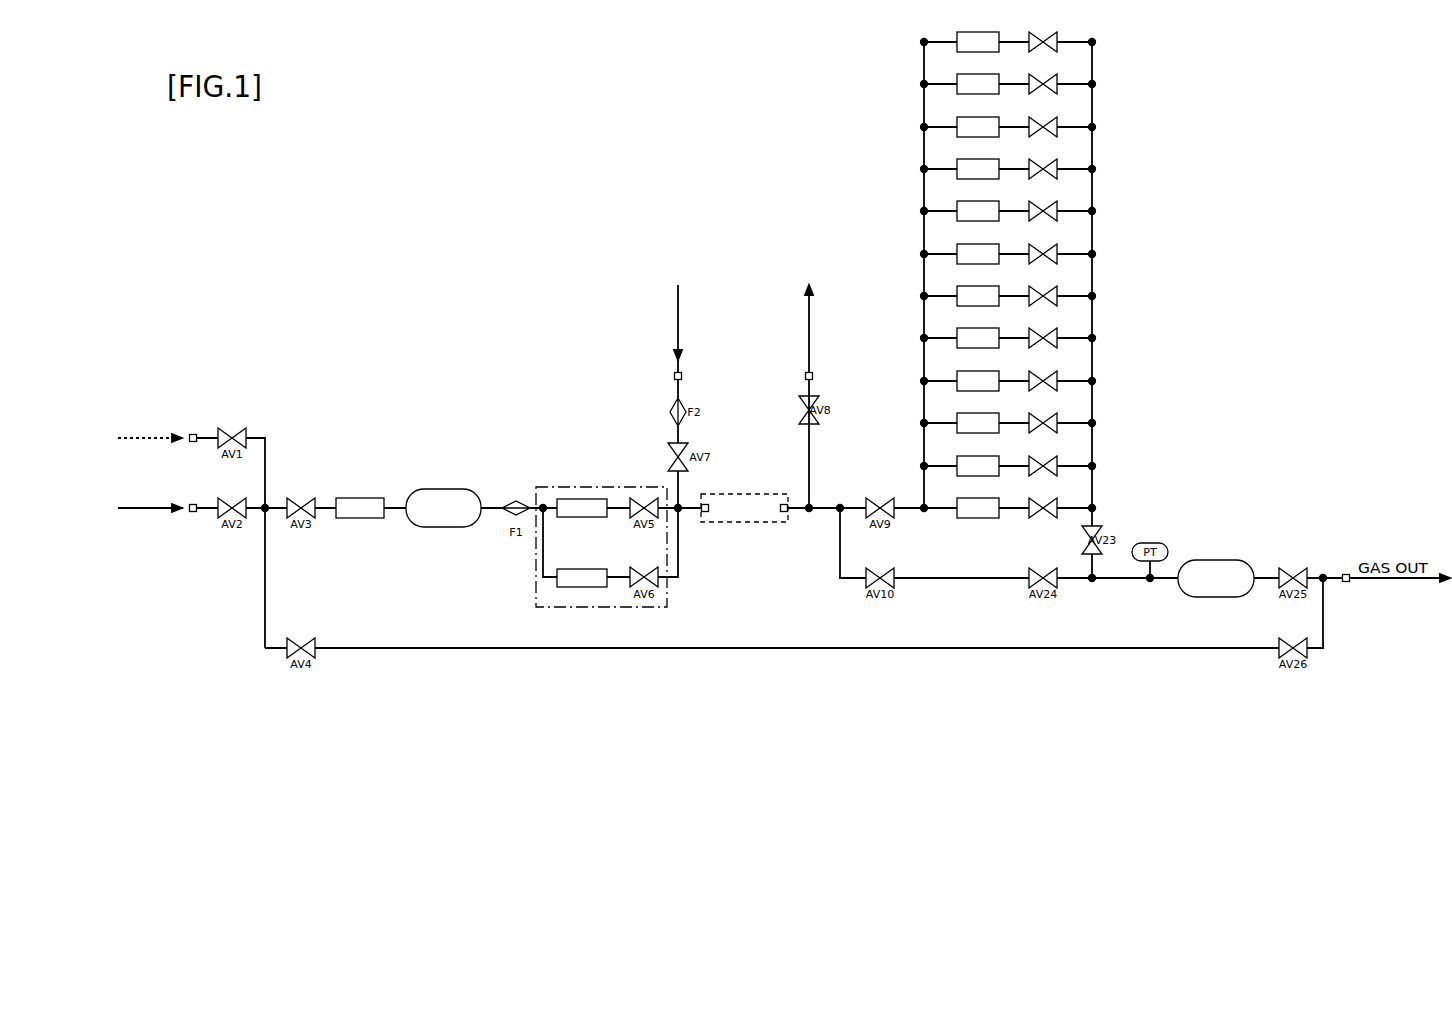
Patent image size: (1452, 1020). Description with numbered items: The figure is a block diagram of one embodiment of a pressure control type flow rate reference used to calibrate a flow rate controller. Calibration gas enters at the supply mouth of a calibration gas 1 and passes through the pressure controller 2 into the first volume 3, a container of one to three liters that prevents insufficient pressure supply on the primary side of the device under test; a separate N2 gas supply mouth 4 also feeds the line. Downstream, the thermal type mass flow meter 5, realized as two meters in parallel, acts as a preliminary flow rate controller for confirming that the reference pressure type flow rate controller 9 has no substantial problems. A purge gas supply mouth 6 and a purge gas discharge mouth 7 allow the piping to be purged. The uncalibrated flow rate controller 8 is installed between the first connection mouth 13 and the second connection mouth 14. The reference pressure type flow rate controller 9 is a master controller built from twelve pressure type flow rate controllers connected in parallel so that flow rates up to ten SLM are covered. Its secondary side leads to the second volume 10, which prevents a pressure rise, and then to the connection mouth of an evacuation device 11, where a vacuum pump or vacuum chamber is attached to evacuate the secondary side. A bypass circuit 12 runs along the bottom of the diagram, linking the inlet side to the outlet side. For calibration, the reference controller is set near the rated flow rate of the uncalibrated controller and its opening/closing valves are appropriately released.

The supply mouth of a calibration gas 1 is at (193, 512).
The pressure controller 2 is at (362, 498).
The first volume 3 is at (446, 489).
The N2 gas supply mouth 4 is at (193, 434).
The thermal type mass flow meter 5 is at (580, 487).
The purge gas supply mouth 6 is at (674, 376).
The purge gas discharge mouth 7 is at (805, 376).
The uncalibrated flow rate controller 8 is at (741, 522).
The reference pressure type flow rate controller 9 is at (1112, 195).
The second volume 10 is at (1216, 560).
The connection mouth of an evacuation device 11 is at (1348, 582).
The bypass circuit 12 is at (900, 648).
The first connection mouth of an uncalibrated flow rate controller 13 is at (705, 522).
The second connection mouth of an uncalibrated flow rate controller 14 is at (784, 522).